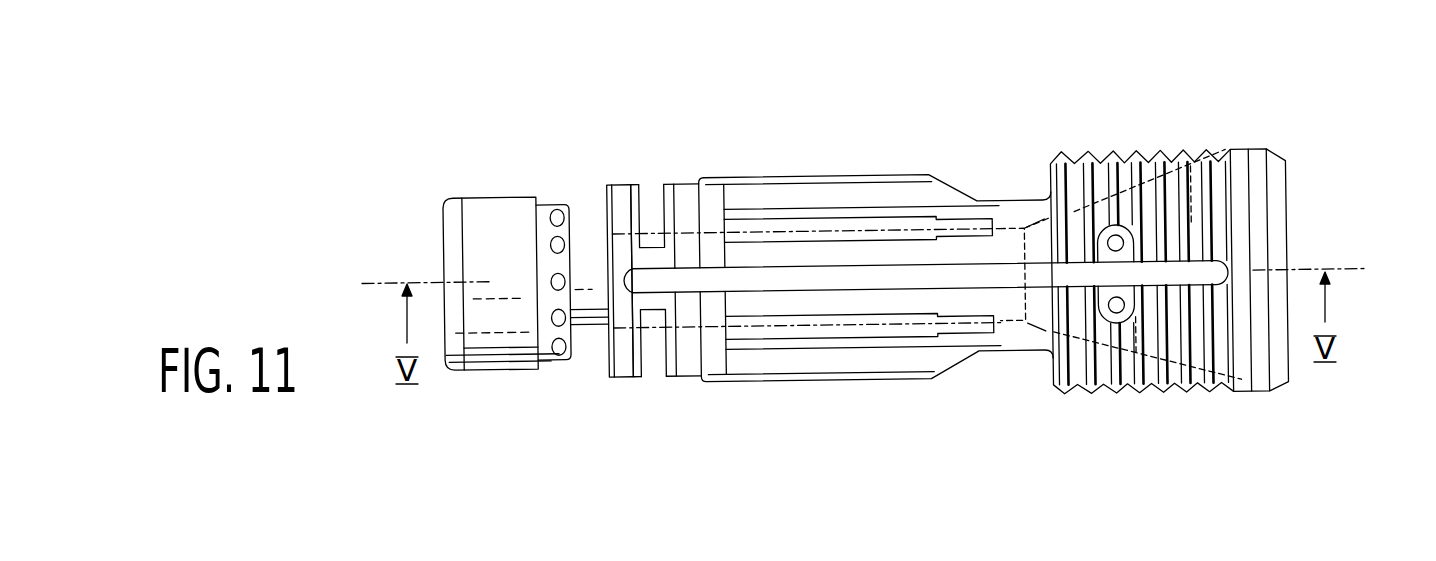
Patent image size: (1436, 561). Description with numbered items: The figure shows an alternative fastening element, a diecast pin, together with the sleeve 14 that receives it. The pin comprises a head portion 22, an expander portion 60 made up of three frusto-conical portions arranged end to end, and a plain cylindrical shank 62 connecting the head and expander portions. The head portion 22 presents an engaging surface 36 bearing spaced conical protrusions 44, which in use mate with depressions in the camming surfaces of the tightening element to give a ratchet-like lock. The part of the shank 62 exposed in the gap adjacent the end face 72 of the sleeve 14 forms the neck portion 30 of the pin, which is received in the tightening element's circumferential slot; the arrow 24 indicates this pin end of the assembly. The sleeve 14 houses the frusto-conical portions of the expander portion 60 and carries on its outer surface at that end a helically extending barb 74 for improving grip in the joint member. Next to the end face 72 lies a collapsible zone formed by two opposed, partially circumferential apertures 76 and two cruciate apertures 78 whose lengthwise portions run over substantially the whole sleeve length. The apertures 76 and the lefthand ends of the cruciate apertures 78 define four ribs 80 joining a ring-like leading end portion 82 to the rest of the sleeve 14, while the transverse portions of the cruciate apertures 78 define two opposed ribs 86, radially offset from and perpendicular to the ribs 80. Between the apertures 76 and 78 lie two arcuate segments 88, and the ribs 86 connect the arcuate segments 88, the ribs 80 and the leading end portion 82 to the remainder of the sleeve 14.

The sleeve 14 is at (803, 175).
The head portion 22 is at (486, 343).
The actuating unit 24 is at (441, 250).
The neck portion 30 is at (583, 245).
The engaging surface 36 is at (528, 237).
The conical protrusions 44 is at (566, 206).
The expander portion 60 is at (1288, 202).
The shank 62 is at (1006, 253).
The end face 72 is at (606, 353).
The helically extending barb 74 is at (1131, 392).
The apertures 76 is at (652, 195).
The cruciate apertures 78 is at (878, 278).
The ribs 80 is at (612, 234).
The ring-like leading end portion 82 is at (620, 378).
The ribs 86 is at (688, 193).
The arcuate segments 88 is at (671, 190).